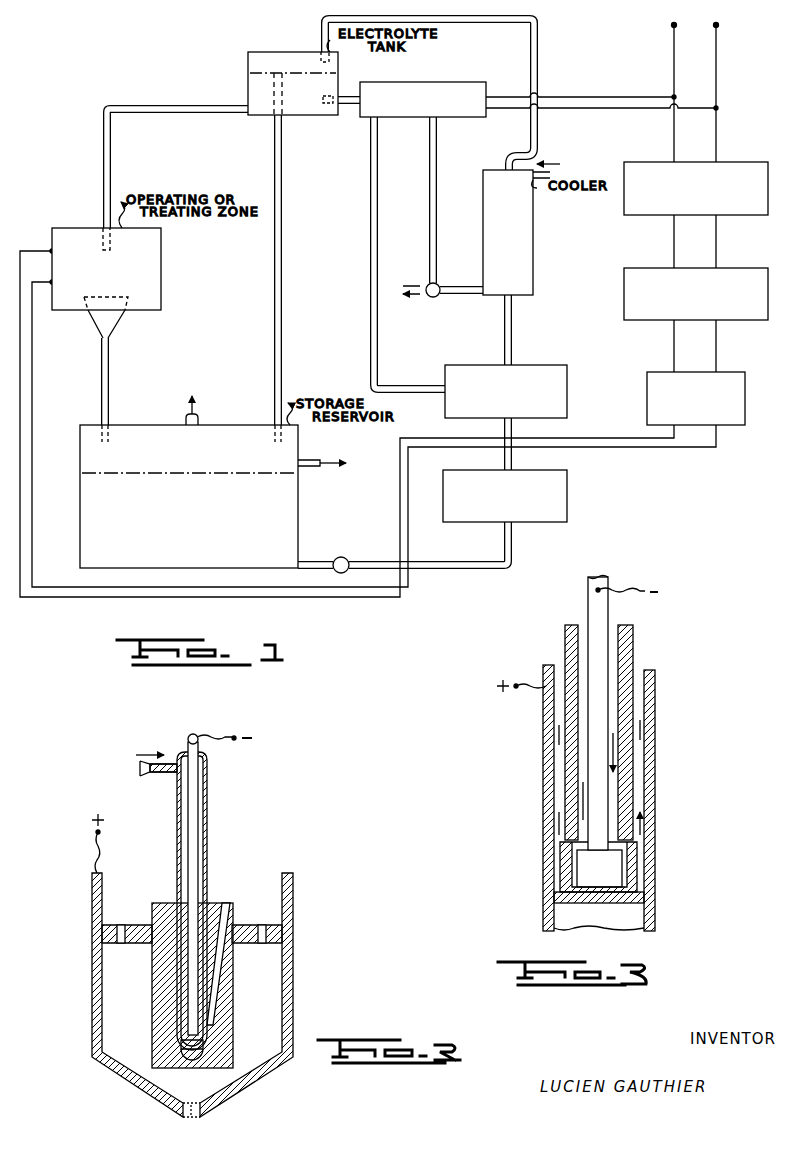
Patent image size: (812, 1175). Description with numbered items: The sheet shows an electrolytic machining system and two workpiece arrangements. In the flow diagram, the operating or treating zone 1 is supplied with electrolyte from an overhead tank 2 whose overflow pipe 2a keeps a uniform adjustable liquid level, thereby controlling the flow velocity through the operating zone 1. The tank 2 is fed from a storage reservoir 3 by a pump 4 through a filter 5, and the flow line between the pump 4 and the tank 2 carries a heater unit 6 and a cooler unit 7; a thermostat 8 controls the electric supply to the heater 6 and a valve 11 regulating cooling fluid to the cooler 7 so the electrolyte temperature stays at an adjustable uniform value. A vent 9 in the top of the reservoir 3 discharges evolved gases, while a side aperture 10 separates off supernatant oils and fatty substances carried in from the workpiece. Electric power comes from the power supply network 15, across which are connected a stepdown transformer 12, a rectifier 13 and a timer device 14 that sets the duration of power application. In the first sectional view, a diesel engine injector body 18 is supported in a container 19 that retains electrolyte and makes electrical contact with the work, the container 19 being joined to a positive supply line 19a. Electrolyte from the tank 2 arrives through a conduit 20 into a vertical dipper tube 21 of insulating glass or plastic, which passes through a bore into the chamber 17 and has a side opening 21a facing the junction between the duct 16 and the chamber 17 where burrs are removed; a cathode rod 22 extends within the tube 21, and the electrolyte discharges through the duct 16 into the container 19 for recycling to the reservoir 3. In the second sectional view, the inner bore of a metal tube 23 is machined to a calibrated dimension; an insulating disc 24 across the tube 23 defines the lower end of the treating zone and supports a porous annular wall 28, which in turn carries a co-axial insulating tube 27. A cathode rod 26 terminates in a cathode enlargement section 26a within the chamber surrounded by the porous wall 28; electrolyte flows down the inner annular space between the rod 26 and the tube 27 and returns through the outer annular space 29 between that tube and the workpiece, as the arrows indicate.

In FIG. 1, the operating or treating zone 1 is at (134, 277).
In FIG. 1, the overhead tank 2 is at (309, 101).
In FIG. 1, the overflow pipe 2a is at (247, 76).
In FIG. 1, the storage reservoir 3 is at (200, 463).
In FIG. 1, the pump 4 is at (348, 559).
In FIG. 1, the filter 5 is at (553, 471).
In FIG. 1, the heater unit 6 is at (556, 366).
In FIG. 1, the cooler unit 7 is at (512, 223).
In FIG. 1, the thermostat 8 is at (484, 75).
In FIG. 1, the vent 9 is at (198, 418).
In FIG. 1, the side aperture 10 is at (312, 458).
In FIG. 1, the valve 11 is at (438, 283).
In FIG. 1, the stepdown transformer 12 is at (745, 163).
In FIG. 1, the rectifier 13 is at (750, 270).
In FIG. 1, the timer device 14 is at (745, 374).
In FIG. 1, the power supply network 15 is at (690, 25).
In FIG. 2, the duct 16 is at (226, 903).
In FIG. 2, the chamber 17 is at (178, 1030).
In FIG. 2, the diesel engine injector body 18 is at (152, 903).
In FIG. 2, the container 19 is at (92, 905).
In FIG. 2, the positive supply line 19a is at (104, 824).
In FIG. 2, the conduit 20 is at (160, 774).
In FIG. 2, the vertical dipper tube 21 is at (215, 802).
In FIG. 2, the side opening 21a is at (203, 1046).
In FIG. 2, the cathode rod 22 is at (198, 845).
In FIG. 3, the metal tube 23 is at (655, 745).
In FIG. 3, the disc 24 is at (640, 905).
In FIG. 3, the cathode rod 26 is at (605, 605).
In FIG. 3, the cathode enlargement section 26a is at (615, 878).
In FIG. 3, the co-axial tube 27 is at (630, 645).
In FIG. 3, the porous annular wall 28 is at (637, 858).
In FIG. 3, the annular passage 29 is at (644, 702).